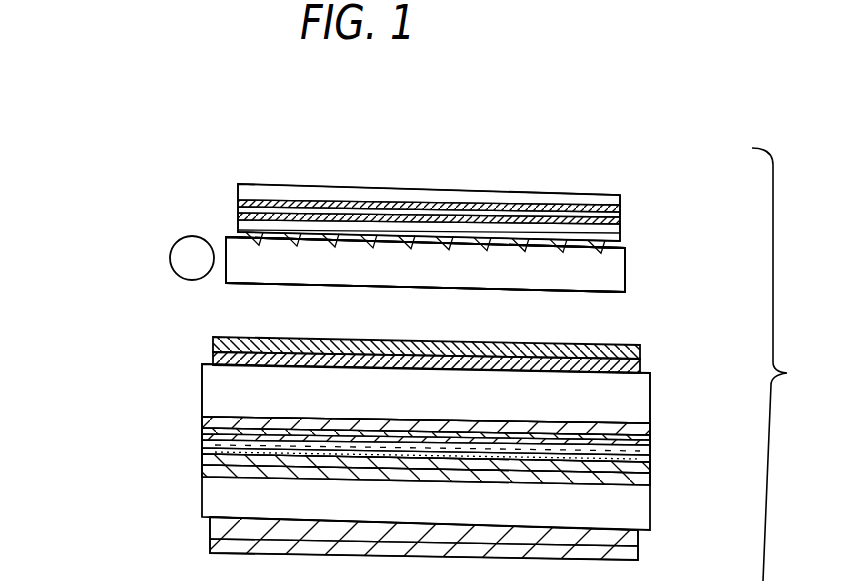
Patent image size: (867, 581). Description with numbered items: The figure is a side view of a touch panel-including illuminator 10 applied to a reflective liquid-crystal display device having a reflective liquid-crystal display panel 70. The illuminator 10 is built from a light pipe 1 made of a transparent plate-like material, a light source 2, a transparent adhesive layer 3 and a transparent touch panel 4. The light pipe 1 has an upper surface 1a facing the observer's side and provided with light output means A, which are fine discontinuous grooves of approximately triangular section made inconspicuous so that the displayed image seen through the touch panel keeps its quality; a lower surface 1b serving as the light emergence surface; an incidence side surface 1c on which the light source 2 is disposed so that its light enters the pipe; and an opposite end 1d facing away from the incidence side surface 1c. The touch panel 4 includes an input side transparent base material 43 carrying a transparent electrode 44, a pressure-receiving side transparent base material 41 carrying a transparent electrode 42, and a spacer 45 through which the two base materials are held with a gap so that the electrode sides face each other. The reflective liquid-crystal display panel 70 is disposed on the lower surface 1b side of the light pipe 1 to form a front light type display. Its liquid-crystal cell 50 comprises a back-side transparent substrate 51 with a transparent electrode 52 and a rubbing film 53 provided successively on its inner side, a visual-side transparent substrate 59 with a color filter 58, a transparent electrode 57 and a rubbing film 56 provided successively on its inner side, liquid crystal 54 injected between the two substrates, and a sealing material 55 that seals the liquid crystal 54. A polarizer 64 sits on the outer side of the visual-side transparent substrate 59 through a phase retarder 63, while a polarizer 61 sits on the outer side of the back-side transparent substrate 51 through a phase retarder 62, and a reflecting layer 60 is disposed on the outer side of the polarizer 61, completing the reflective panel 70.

The touch panel-including illuminator 10 is at (163, 196).
The light pipe 1 is at (660, 280).
The upper surface 1a is at (226, 237).
The lower surface 1b is at (593, 292).
The incidence side surface 1c is at (226, 283).
The opposite end 1d is at (626, 287).
The light source 2 is at (170, 257).
The transparent adhesive layer 3 is at (652, 276).
The light output means A is at (296, 248).
The transparent touch panel 4 is at (708, 158).
The pressure-receiving side transparent base material 41 is at (620, 238).
The transparent electrode 42 is at (620, 221).
The input side transparent base material 43 is at (620, 196).
The transparent electrode 44 is at (620, 209).
The spacer 45 is at (613, 207).
The reflective liquid-crystal display panel 70 is at (92, 364).
The polarizer 64 is at (213, 344).
The phase retarder 63 is at (213, 358).
The visual-side transparent substrate 59 is at (202, 382).
The liquid-crystal cell 50 is at (117, 370).
The transparent electrode 57 is at (202, 420).
The color filter 58 is at (650, 432).
The rubbing film 56 is at (202, 435).
The liquid crystal 54 is at (202, 445).
The rubbing film 53 is at (202, 452).
The transparent electrode 52 is at (202, 472).
The sealing material 55 is at (650, 463).
The back-side transparent substrate 51 is at (202, 502).
The reflecting layer 60 is at (638, 555).
The phase retarder 62 is at (210, 530).
The polarizer 61 is at (210, 542).